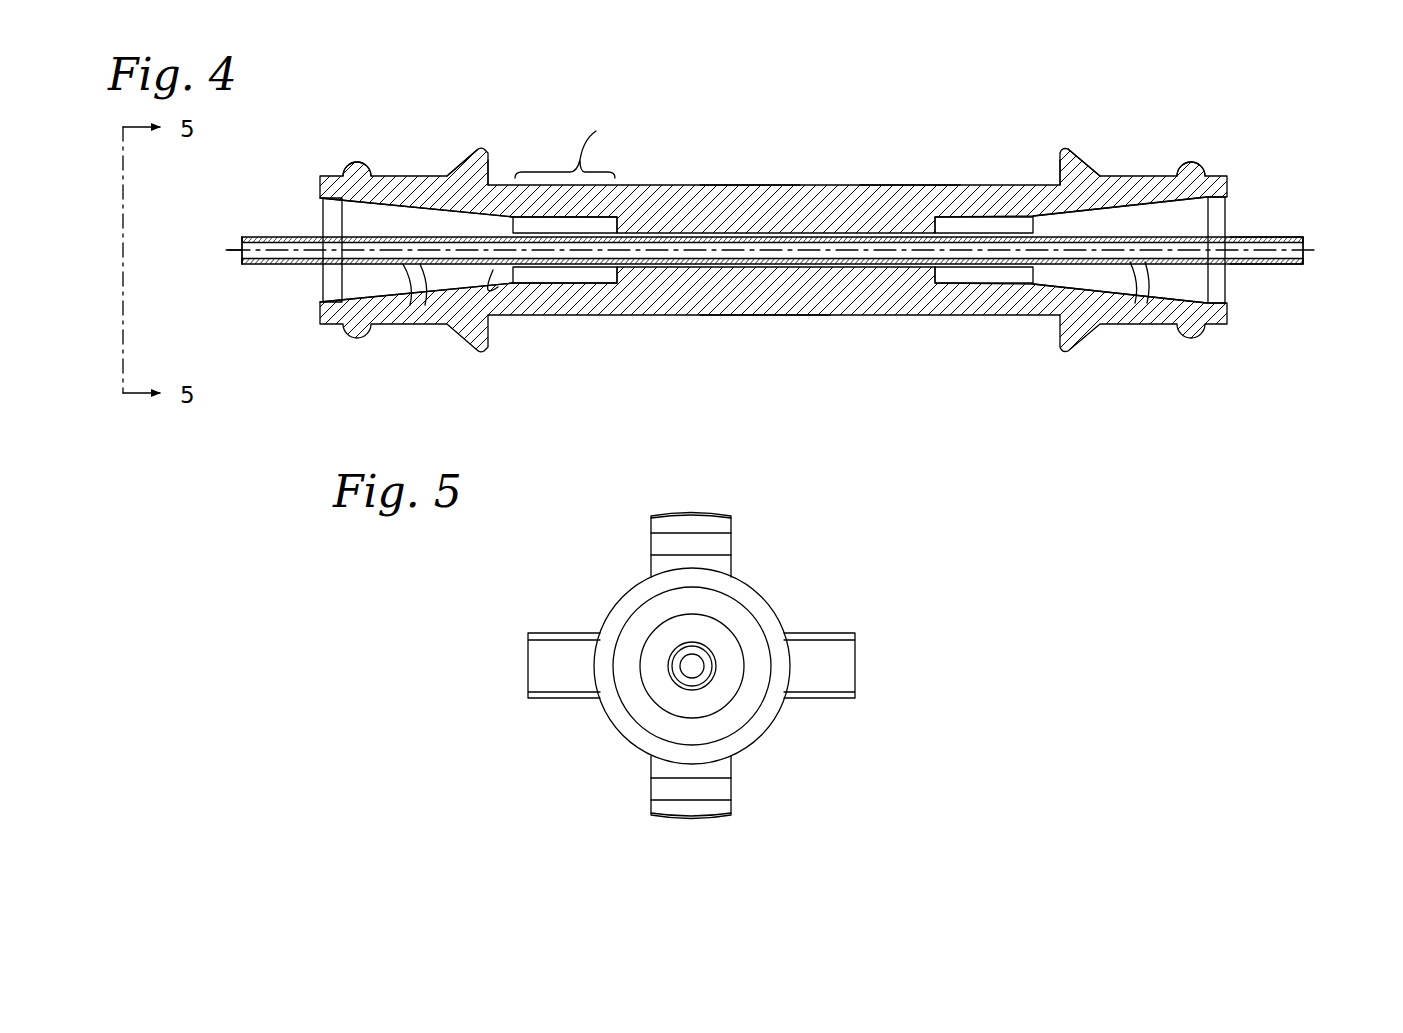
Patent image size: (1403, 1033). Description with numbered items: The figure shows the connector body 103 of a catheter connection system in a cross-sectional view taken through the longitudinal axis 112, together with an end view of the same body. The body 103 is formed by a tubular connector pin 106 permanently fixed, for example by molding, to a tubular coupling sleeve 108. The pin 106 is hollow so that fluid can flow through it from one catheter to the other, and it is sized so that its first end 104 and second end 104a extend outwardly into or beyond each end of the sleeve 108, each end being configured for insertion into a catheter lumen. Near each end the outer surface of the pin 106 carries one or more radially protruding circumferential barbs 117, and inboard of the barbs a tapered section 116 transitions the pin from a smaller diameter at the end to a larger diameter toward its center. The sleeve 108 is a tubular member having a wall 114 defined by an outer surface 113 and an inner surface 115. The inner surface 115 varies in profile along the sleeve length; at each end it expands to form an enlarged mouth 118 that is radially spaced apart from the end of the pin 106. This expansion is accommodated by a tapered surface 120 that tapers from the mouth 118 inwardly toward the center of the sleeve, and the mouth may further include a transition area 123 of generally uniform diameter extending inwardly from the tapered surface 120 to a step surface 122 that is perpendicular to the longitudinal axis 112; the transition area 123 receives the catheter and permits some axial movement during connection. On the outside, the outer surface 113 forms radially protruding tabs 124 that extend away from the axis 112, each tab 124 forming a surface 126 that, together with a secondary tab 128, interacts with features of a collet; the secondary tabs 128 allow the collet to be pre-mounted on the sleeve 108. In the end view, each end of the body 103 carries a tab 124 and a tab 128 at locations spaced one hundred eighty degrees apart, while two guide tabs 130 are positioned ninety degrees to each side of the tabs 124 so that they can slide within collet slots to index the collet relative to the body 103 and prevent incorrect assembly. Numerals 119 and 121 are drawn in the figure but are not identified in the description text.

In FIG. 4, the connector body 103 is at (767, 320).
In FIG. 4, the first end of pin 104 is at (1302, 238).
In FIG. 4, the second end of pin 104a is at (240, 236).
In FIG. 4, the tubular connector pin 106 is at (1260, 236).
In FIG. 4, the tubular coupling sleeve 108 is at (798, 185).
In FIG. 4, the longitudinal axis 112 is at (236, 252).
In FIG. 4, the outer surface 113 is at (698, 185).
In FIG. 5, the outer surface 113 is at (765, 600).
In FIG. 4, the wall 114 is at (882, 200).
In FIG. 4, the inner surface 115 is at (498, 287).
In FIG. 4, the tapered section 116 is at (540, 303).
In FIG. 4, the barb 117 is at (425, 305).
In FIG. 4, the enlarged mouth 118 is at (330, 225).
In FIG. 4, the nut 119 is at (460, 278).
In FIG. 4, the tapered surface 120 is at (397, 217).
In FIG. 4, the nut 121 is at (318, 304).
In FIG. 4, the step surface 122 is at (600, 283).
In FIG. 4, the transition area 123 is at (581, 149).
In FIG. 4, the tab 124 is at (480, 148).
In FIG. 5, the tab 124 is at (700, 512).
In FIG. 4, the surface 126 is at (488, 163).
In FIG. 4, the secondary tab 128 is at (352, 163).
In FIG. 5, the secondary tab 128 is at (653, 565).
In FIG. 5, the guide tab 130 is at (857, 655).